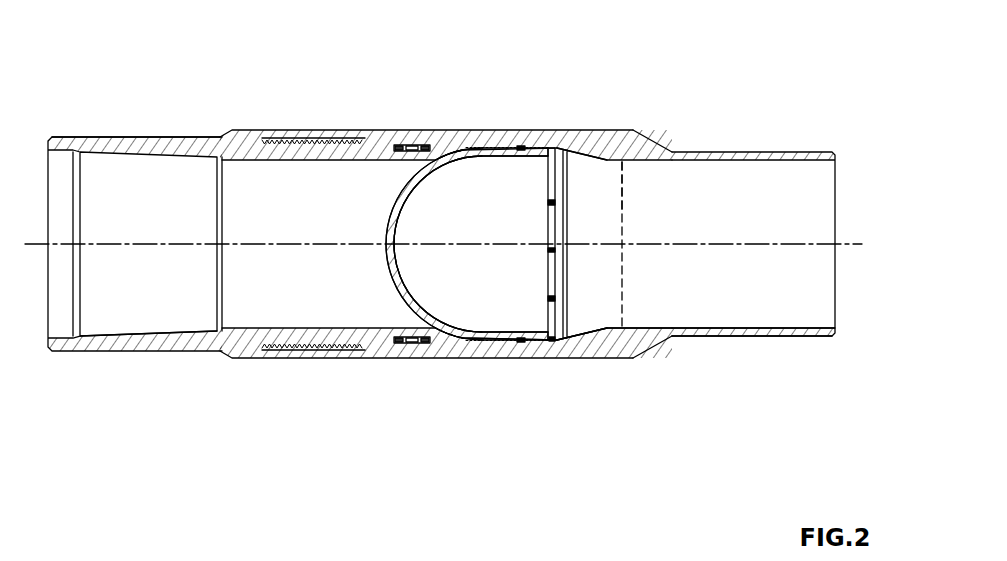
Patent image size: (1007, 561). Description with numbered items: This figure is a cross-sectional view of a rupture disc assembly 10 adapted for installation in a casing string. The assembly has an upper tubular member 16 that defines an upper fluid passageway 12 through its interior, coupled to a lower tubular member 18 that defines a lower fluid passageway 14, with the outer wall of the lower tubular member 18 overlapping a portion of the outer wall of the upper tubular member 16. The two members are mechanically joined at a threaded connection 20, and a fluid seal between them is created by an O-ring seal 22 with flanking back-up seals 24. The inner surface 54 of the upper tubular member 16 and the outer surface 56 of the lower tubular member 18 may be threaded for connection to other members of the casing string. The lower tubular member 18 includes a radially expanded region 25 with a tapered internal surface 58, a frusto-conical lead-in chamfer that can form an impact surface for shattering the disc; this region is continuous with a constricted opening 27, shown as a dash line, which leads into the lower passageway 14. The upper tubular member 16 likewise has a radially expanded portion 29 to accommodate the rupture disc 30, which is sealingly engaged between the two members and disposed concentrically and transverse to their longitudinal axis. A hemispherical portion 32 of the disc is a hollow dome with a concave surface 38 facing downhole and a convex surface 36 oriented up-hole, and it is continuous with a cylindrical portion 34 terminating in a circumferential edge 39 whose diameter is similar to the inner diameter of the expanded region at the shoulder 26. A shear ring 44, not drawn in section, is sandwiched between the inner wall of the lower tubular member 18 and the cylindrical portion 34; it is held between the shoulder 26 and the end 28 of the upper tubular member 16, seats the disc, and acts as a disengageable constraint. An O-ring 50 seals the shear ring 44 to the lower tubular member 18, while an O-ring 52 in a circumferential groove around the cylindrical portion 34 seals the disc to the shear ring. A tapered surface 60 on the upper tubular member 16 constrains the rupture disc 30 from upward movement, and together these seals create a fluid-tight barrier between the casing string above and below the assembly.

The rupture disc assembly 10 is at (668, 37).
The upper fluid passageway 12 is at (99, 177).
The lower fluid passageway 14 is at (790, 305).
The upper tubular member 16 is at (178, 135).
The lower tubular member 18 is at (598, 128).
The threaded connection 20 is at (296, 137).
The O-ring seal 22 is at (410, 147).
The back-up seals 24 is at (394, 149).
The radially expanded region 25 is at (594, 172).
The shoulder 26 is at (571, 341).
The constricted opening 27 is at (623, 205).
The end 28 is at (468, 332).
The radially expanded portion 29 is at (441, 158).
The rupture disc 30 is at (392, 228).
The hemispherical portion 32 is at (463, 279).
The cylindrical portion 34 is at (513, 316).
The convex surface 36 is at (400, 203).
The concave surface 38 is at (410, 198).
The circumferential edge 39 is at (550, 322).
The shear ring 44 is at (600, 130).
The O-ring 50 is at (510, 147).
The O-ring 52 is at (522, 150).
The inner surface 54 is at (155, 337).
The outer surface 56 is at (745, 338).
The tapered internal surface 58 is at (610, 327).
The tapered surface 60 is at (435, 333).